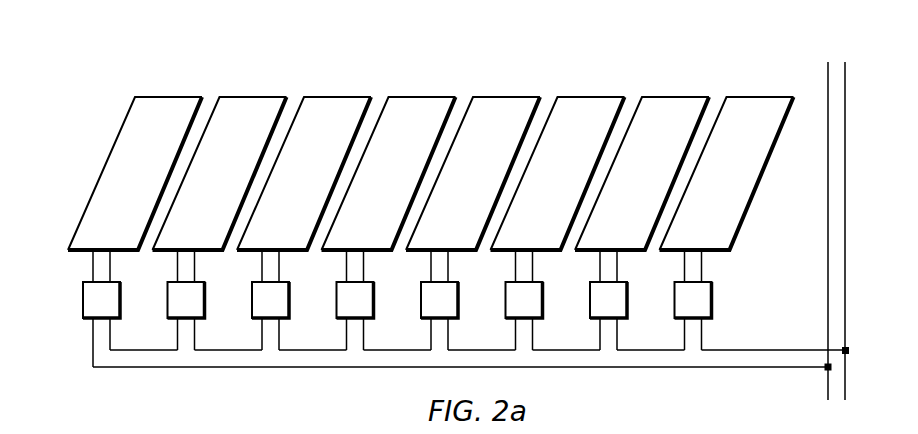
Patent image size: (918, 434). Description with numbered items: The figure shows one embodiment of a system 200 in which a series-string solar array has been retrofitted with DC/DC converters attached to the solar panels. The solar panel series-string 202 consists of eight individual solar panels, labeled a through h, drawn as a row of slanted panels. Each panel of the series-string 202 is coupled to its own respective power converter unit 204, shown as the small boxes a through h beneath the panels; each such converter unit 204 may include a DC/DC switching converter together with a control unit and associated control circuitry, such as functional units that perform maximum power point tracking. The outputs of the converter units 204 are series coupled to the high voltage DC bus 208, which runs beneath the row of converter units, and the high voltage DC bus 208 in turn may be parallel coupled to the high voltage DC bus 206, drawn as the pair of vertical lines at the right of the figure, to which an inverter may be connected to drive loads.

The system 200 is at (216, 57).
The solar panel series-string 202 is at (98, 146).
The power converter unit 204 is at (722, 290).
The high voltage DC bus 206 is at (820, 100).
The high voltage DC bus 208 is at (290, 372).